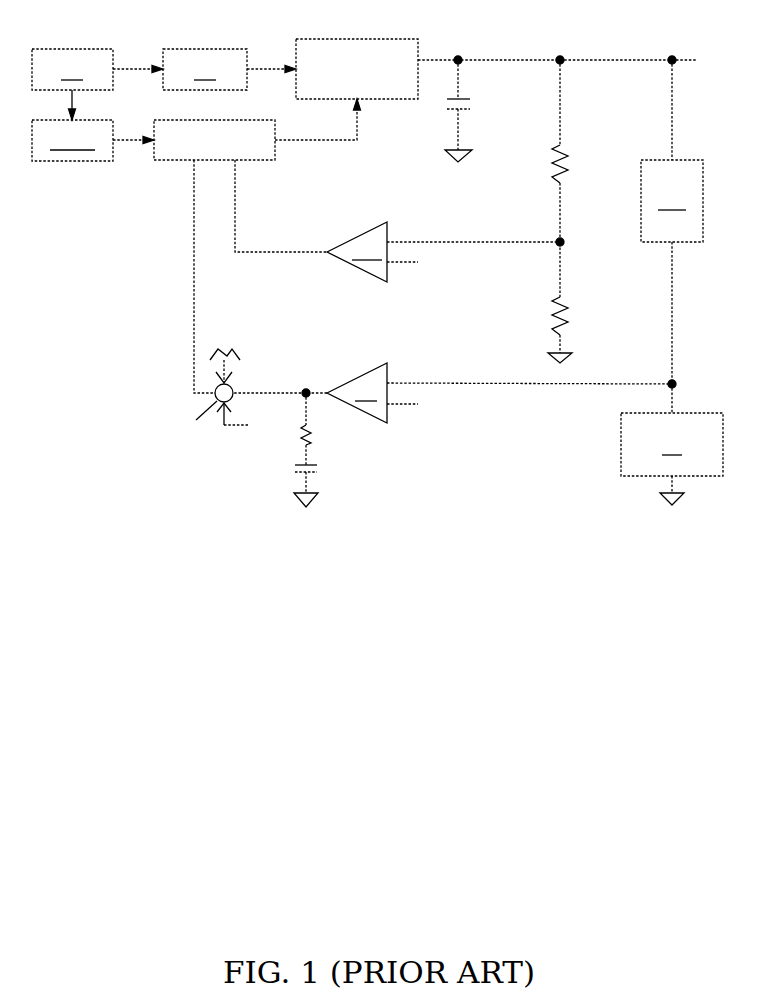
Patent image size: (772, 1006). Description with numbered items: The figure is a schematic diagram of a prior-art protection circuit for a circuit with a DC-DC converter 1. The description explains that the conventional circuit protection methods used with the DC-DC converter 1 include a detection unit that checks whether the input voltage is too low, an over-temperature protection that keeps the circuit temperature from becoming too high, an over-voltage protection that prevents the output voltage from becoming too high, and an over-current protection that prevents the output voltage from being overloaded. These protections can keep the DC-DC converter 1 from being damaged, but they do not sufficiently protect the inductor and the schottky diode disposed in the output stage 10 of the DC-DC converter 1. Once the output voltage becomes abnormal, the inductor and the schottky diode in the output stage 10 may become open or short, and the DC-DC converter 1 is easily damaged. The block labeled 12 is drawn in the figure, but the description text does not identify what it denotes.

The DC-DC converter 1 is at (53, 35).
The output stage 10 is at (346, 81).
The control circuit 12 is at (203, 150).